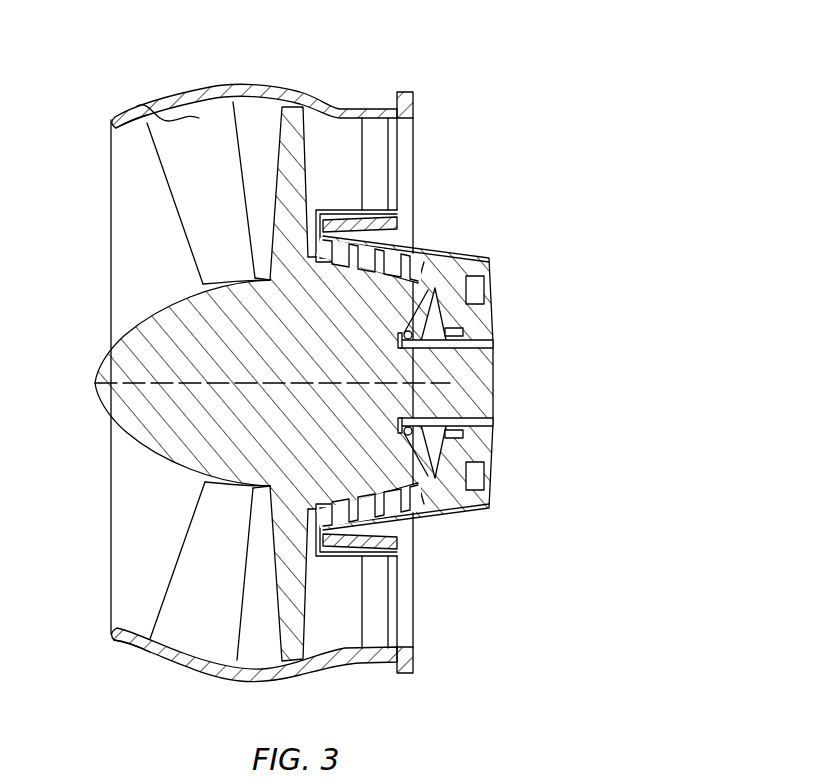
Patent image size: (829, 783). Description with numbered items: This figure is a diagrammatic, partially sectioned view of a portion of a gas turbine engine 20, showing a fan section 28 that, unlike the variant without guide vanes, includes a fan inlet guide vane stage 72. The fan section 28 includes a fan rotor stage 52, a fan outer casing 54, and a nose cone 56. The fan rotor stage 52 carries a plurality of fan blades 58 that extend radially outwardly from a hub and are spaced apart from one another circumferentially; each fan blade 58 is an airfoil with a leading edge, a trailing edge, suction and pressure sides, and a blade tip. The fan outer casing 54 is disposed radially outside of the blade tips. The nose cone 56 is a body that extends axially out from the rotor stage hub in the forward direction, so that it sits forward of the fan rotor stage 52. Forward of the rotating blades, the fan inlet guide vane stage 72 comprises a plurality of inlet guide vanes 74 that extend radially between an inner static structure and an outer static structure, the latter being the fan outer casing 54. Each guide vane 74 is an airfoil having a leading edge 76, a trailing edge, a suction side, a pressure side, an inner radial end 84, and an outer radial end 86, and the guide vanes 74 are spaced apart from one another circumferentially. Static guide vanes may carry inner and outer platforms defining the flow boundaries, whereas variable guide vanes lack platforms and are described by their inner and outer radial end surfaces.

The gas turbine engine 20 is at (437, 78).
The fan section 28 is at (145, 80).
The fan rotor stage 52 is at (266, 596).
The fan outer casing 54 is at (167, 106).
The nose cone 56 is at (98, 400).
The fan blade 58 is at (289, 650).
The fan inlet guide vane stage 72 is at (137, 606).
The inlet guide vane 74 is at (160, 200).
The leading edge 76 is at (160, 162).
The inner radial end 84 is at (224, 284).
The outer radial end 86 is at (133, 107).